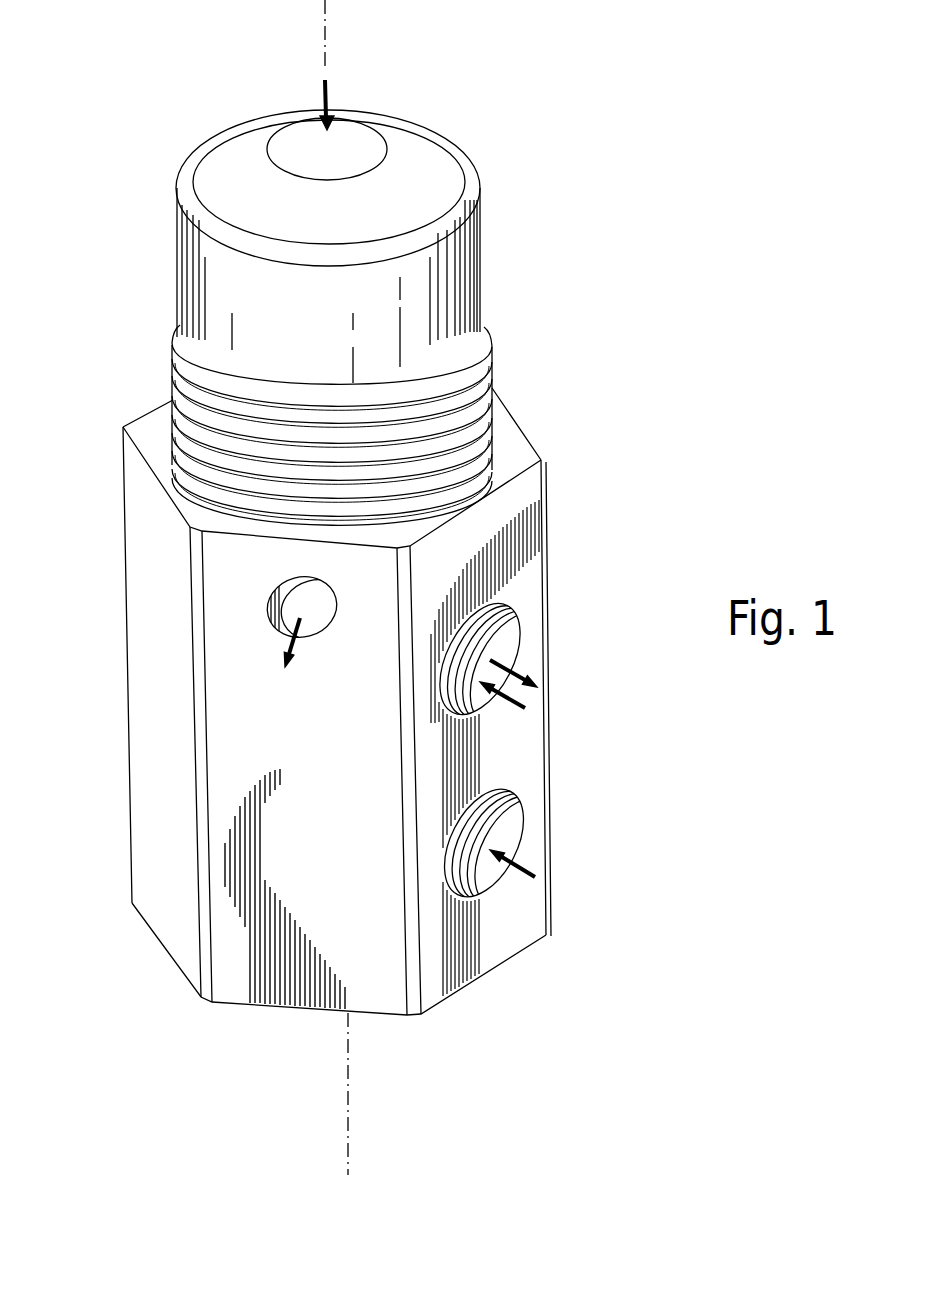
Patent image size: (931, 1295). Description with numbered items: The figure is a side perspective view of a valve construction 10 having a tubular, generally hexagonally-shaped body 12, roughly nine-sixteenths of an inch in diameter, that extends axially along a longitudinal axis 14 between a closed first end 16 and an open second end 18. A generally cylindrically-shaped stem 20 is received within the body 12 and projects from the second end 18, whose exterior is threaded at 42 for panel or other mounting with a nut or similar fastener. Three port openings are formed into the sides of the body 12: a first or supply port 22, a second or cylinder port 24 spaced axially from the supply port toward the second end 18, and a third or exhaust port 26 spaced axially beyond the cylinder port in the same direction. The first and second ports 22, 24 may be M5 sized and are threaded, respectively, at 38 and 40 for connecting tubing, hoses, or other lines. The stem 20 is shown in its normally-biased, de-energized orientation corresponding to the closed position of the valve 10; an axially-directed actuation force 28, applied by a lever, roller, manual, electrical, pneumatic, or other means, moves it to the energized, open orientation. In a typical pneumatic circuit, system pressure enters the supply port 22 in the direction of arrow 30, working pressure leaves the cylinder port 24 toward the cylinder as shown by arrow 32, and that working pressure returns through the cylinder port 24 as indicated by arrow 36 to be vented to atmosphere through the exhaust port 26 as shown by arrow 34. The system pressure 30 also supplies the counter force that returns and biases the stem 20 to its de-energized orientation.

The valve construction 10 is at (632, 90).
The body 12 is at (128, 868).
The longitudinal axis 14 is at (350, 1147).
The closed first end 16 is at (226, 1004).
The open second end 18 is at (357, 415).
The stem 20 is at (480, 174).
The first or supply port 22 is at (533, 905).
The second or cylinder port 24 is at (528, 678).
The third or exhaust port 26 is at (342, 633).
The actuation force 28 is at (330, 95).
The system pressure flow 30 is at (537, 858).
The working pressure flow 32 is at (520, 653).
The exhaust flow 34 is at (305, 643).
The return flow 36 is at (513, 700).
The first port threads 38 is at (455, 907).
The second port threads 40 is at (472, 723).
The second end threads 42 is at (186, 420).